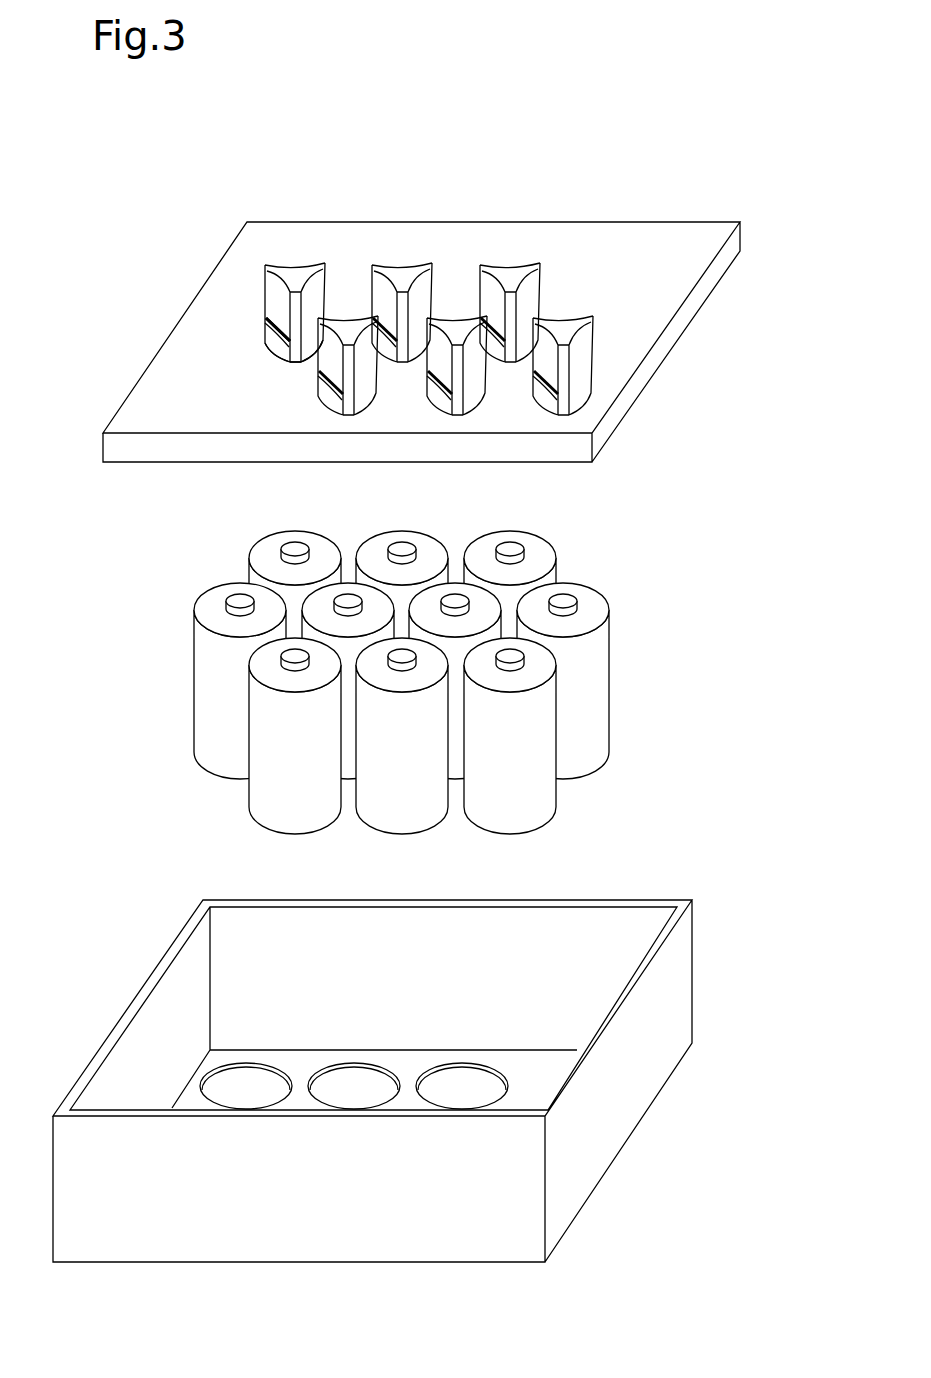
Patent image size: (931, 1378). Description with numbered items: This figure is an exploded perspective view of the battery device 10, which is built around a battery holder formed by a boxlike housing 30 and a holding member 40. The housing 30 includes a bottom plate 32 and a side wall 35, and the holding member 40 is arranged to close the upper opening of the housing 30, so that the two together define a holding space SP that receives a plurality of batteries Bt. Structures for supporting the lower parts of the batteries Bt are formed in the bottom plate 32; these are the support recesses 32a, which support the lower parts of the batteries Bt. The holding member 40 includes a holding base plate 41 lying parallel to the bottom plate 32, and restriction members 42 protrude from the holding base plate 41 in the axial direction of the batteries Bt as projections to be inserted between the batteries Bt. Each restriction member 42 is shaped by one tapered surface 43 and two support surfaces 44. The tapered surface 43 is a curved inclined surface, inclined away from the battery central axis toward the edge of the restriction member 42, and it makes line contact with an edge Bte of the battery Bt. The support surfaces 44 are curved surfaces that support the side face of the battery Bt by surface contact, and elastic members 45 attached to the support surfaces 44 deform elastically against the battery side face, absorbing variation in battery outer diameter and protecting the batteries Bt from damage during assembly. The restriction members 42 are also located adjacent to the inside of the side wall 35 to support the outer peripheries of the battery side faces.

The battery device 10 is at (724, 160).
The holding member 40 is at (435, 152).
The holding base plate 41 is at (421, 219).
The restriction member 42 is at (297, 290).
The tapered surface 43 is at (308, 325).
The support surface 44 is at (291, 268).
The elastic member 45 is at (266, 328).
The battery Bt is at (608, 658).
The edge of the battery Bte is at (605, 597).
The housing 30 is at (763, 998).
The side wall 35 is at (668, 1020).
The bottom plate 32 is at (550, 1065).
The support recess 32a is at (452, 1100).
The holding space SP is at (425, 1001).